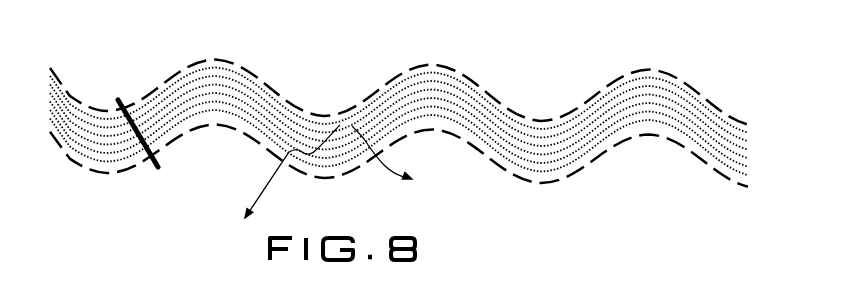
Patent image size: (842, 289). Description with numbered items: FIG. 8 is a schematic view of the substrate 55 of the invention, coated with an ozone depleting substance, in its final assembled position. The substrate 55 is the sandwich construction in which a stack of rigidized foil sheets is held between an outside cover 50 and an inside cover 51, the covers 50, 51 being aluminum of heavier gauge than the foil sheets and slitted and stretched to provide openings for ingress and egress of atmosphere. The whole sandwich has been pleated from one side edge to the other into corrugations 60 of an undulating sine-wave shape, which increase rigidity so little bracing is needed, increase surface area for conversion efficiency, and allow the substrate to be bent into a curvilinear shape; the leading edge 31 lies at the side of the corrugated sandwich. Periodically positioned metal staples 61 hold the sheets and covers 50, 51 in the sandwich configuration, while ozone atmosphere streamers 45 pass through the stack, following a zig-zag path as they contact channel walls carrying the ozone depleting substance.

The leading edge 31 is at (752, 128).
The ozone atmosphere streamers 45 is at (249, 202).
The outside cover 50 is at (698, 153).
The inside cover 51 is at (672, 78).
The substrate 55 is at (538, 93).
The corrugations 60 is at (566, 186).
The metal staples 61 is at (157, 166).